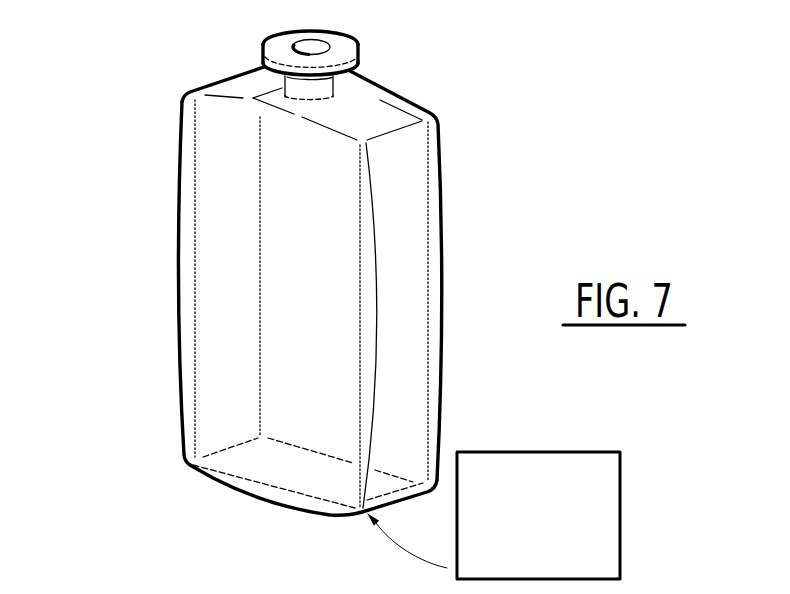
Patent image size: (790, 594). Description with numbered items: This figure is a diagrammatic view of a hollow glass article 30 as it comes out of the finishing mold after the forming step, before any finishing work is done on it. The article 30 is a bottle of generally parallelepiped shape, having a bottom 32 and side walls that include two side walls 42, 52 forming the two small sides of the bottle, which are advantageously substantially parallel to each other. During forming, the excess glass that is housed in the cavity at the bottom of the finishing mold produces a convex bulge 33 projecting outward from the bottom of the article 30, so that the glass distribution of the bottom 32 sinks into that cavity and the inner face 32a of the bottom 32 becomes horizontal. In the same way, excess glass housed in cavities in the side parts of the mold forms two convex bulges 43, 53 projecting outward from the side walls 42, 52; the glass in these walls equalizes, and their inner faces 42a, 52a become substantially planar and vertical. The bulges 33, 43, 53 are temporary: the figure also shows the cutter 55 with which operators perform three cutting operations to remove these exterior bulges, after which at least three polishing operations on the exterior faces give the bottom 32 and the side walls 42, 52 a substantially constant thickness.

The hollow glass article 30 is at (460, 210).
The bottom 32 is at (299, 468).
The inner face of the bottom 32a is at (243, 480).
The convex bulge 33 is at (290, 503).
The side wall 42 is at (229, 240).
The inner face of the side wall 42a is at (195, 190).
The convex bulge 43 is at (187, 280).
The side wall 52 is at (413, 170).
The inner face of the side wall 52a is at (362, 347).
The convex bulge 53 is at (377, 247).
The cutter 55 is at (552, 452).